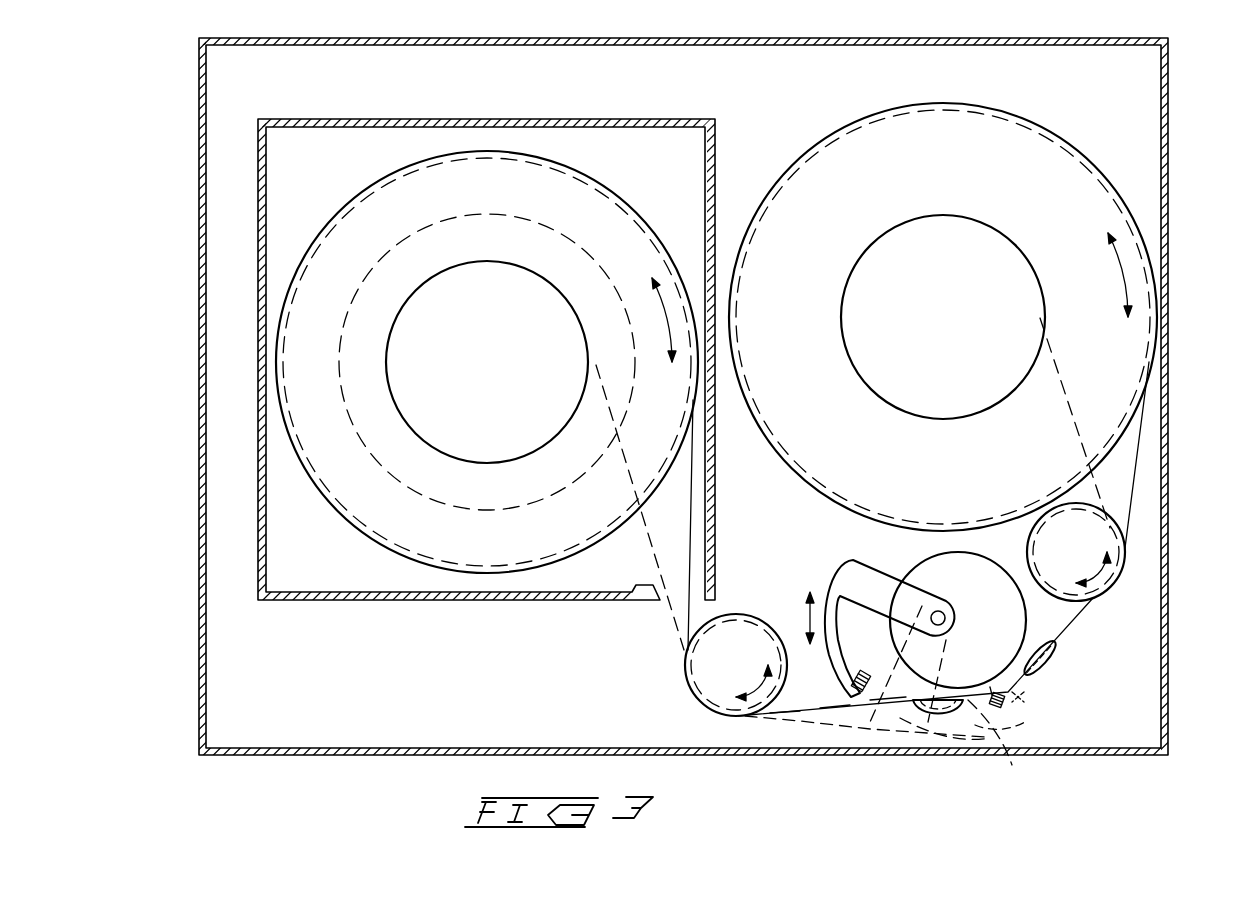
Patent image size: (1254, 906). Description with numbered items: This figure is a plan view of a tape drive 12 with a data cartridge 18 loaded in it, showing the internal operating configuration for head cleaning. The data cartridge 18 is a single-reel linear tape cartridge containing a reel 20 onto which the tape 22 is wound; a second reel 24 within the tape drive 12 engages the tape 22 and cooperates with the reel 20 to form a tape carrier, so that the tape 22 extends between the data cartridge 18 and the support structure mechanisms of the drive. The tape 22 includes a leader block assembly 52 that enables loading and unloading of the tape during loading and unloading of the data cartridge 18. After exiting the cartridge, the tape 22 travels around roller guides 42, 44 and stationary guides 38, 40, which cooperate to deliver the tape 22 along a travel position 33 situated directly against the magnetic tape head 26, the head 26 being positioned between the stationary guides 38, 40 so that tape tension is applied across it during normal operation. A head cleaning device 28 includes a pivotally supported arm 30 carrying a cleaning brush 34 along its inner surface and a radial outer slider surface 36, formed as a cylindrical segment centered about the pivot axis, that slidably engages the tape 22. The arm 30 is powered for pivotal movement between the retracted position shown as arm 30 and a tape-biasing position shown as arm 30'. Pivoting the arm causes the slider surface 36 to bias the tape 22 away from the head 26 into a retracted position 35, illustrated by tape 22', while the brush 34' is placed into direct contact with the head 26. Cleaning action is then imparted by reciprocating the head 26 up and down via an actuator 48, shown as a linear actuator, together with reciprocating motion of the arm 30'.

The tape drive 12 is at (1168, 136).
The data cartridge 18 is at (448, 620).
The reel 20 is at (356, 533).
The tape 22 is at (872, 517).
The tape in retracted position 22' is at (867, 765).
The second reel 24 is at (943, 308).
The magnetic tape head 26 is at (993, 707).
The head cleaning device 28 is at (893, 651).
The pivotally supported arm 30 is at (860, 625).
The arm in tape-biasing position 30' is at (950, 707).
The travel position 33 is at (888, 716).
The cleaning brush 34 is at (865, 655).
The cleaning brush in cleaning position 34' is at (1034, 710).
The retracted position 35 is at (778, 733).
The radial outer slider surface 36 is at (830, 690).
The stationary guide 38 is at (935, 720).
The stationary guide 40 is at (1052, 673).
The roller guide 42 is at (685, 675).
The roller guide 44 is at (1120, 588).
The actuator 48 is at (894, 555).
The leader block assembly 52 is at (1012, 405).